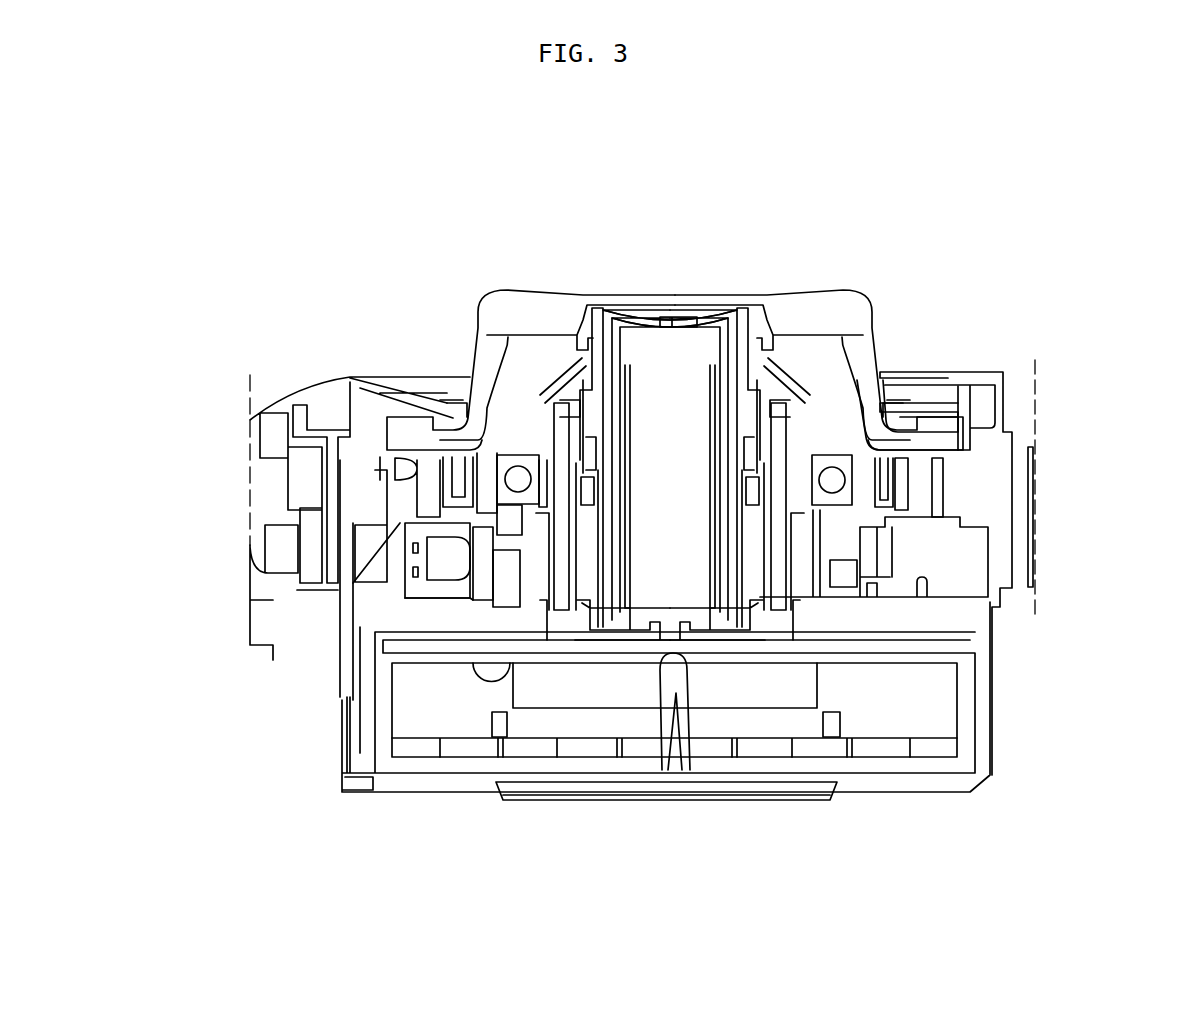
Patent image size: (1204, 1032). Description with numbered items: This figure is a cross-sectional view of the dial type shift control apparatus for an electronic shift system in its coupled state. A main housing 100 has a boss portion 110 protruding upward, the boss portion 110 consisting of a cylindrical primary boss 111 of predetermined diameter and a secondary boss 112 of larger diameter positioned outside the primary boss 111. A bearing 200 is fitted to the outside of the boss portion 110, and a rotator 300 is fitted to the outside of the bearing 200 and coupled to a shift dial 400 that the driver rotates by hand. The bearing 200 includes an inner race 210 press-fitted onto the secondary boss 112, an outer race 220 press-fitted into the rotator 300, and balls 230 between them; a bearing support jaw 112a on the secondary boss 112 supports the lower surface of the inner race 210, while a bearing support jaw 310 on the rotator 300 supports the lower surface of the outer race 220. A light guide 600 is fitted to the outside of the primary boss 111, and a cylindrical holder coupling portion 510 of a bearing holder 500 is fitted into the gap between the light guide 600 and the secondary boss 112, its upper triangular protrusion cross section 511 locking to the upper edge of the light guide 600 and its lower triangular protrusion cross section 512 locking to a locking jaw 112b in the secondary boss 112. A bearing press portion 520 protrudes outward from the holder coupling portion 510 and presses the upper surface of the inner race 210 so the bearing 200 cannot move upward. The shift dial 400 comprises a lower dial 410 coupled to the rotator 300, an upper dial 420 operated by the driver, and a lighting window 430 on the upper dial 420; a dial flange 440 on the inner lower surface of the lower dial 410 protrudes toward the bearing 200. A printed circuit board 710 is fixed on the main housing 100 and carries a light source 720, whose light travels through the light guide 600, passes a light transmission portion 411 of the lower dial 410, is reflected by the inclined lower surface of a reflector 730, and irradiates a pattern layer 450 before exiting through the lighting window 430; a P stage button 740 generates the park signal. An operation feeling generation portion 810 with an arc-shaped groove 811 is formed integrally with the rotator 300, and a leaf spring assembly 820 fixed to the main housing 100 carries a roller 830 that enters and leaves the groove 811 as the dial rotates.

The main housing 100 is at (985, 710).
The boss portion 110 is at (1112, 540).
The primary boss 111 is at (587, 557).
The secondary boss 112 is at (523, 600).
The bearing support jaw 112a is at (500, 498).
The locking jaw 112b is at (527, 538).
The bearing 200 is at (497, 478).
The inner race 210 is at (950, 437).
The outer race 220 is at (847, 493).
The balls 230 is at (920, 473).
The rotator 300 is at (503, 600).
The bearing support jaw 310 is at (482, 520).
The shift dial 400 is at (778, 290).
The lower dial 410 is at (536, 400).
The light transmission portion 411 is at (815, 328).
The upper dial 420 is at (482, 352).
The lighting window 430 is at (800, 310).
The dial flange 440 is at (510, 427).
The pattern layer 450 is at (555, 380).
The bearing holder 500 is at (952, 287).
The holder coupling portion 510 is at (837, 435).
The upper triangular protrusion cross section 511 is at (570, 395).
The lower triangular protrusion cross section 512 is at (552, 540).
The bearing press portion 520 is at (867, 445).
The light guide 600 is at (812, 440).
The printed circuit board 710 is at (860, 647).
The light source 720 is at (556, 636).
The reflector 730 is at (766, 362).
The P stage button 740 is at (668, 372).
The operation feeling generation portion 810 is at (497, 575).
The groove 811 is at (540, 510).
The leaf spring assembly 820 is at (410, 562).
The roller 830 is at (460, 560).